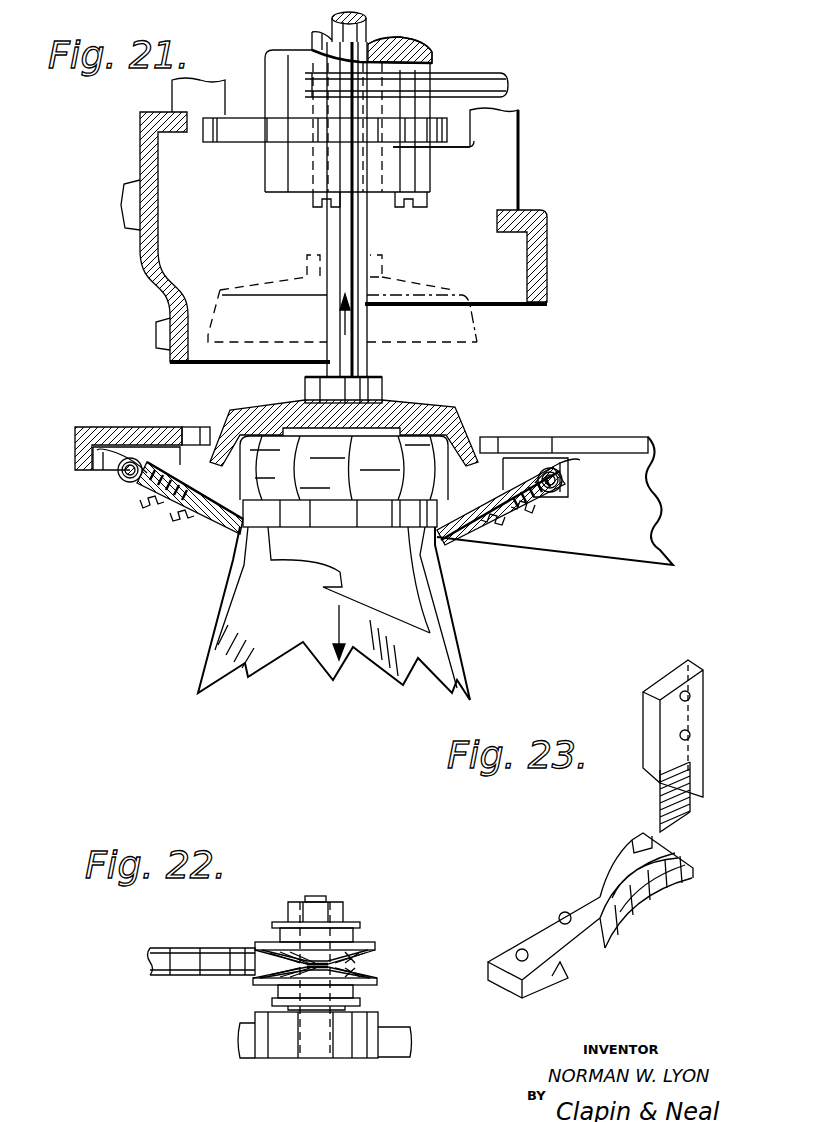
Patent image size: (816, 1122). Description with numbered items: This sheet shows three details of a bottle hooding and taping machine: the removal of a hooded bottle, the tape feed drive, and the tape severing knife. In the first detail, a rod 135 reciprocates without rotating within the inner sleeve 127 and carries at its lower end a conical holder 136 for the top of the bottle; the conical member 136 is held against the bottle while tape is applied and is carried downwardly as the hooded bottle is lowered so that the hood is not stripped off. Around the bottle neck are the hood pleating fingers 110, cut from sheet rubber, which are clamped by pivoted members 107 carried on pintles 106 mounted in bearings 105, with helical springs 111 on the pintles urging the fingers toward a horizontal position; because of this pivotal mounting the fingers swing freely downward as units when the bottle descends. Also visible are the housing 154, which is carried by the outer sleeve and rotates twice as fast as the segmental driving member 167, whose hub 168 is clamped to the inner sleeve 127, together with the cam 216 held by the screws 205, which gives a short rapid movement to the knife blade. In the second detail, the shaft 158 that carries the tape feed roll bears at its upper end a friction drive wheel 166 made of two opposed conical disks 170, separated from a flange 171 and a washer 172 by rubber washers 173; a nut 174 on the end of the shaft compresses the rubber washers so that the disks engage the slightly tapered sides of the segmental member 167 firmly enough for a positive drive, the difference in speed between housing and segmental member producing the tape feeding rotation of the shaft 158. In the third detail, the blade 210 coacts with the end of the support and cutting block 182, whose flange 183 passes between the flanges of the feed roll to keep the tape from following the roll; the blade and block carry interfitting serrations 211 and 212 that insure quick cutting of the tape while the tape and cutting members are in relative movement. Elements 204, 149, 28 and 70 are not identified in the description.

In FIG. 21, the rod 135 is at (347, 30).
In FIG. 21, the inner sleeve 127 is at (372, 45).
In FIG. 21, the hub 168 is at (283, 58).
In FIG. 21, the segmental driving member 167 is at (488, 88).
In FIG. 22, the segmental driving member 167 is at (164, 962).
In FIG. 21, the flange 204 is at (258, 128).
In FIG. 21, the cam 216 is at (405, 175).
In FIG. 21, the housing 154 is at (503, 172).
In FIG. 21, the screws 205 is at (422, 204).
In FIG. 21, the conical holder 136 is at (218, 290).
In FIG. 21, the bellows 149 is at (382, 516).
In FIG. 21, the plate 28 is at (640, 515).
In FIG. 21, the bearings 105 is at (118, 487).
In FIG. 21, the pintles 106 is at (110, 472).
In FIG. 21, the members 107 is at (142, 456).
In FIG. 21, the helical springs 111 is at (130, 446).
In FIG. 21, the fingers 110 is at (226, 520).
In FIG. 21, the workpiece 70 is at (320, 562).
In FIG. 22, the shaft 158 is at (316, 896).
In FIG. 22, the nut 174 is at (295, 912).
In FIG. 22, the washer 172 is at (348, 922).
In FIG. 22, the rubber washers 173 is at (282, 933).
In FIG. 22, the conical disks 170 is at (370, 942).
In FIG. 22, the friction drive wheel 166 is at (382, 960).
In FIG. 22, the flange 171 is at (360, 1004).
In FIG. 23, the blade 210 is at (692, 779).
In FIG. 23, the serrations 211 is at (664, 798).
In FIG. 23, the serrations 212 is at (636, 836).
In FIG. 23, the support and cutting block 182 is at (648, 849).
In FIG. 23, the flange 183 is at (665, 872).